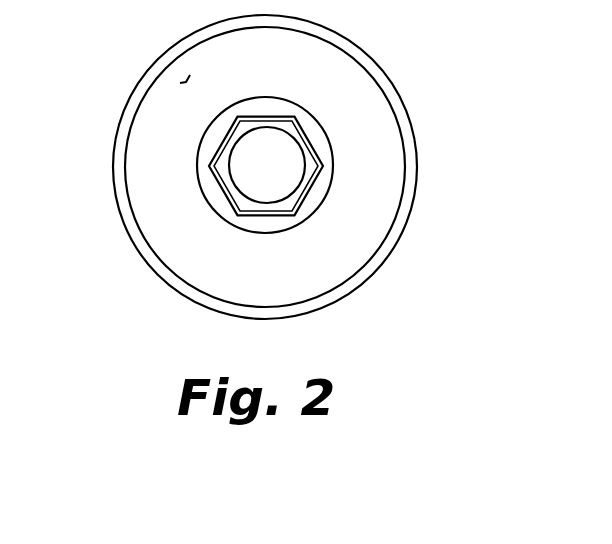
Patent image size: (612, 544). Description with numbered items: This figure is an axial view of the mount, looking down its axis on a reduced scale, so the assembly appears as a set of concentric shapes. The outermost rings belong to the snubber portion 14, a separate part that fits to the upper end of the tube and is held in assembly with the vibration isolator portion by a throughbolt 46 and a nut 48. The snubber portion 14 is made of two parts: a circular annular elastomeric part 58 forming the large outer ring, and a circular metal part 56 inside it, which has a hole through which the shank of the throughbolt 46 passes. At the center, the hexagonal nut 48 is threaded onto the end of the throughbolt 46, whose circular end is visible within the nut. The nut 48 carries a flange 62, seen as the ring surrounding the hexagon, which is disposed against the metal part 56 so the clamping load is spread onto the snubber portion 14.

The snubber portion 14 is at (390, 80).
The circular annular elastomeric part 58 is at (140, 88).
The circular metal part 56 is at (190, 75).
The flange 62 is at (333, 168).
The nut 48 is at (307, 147).
The throughbolt 46 is at (270, 127).